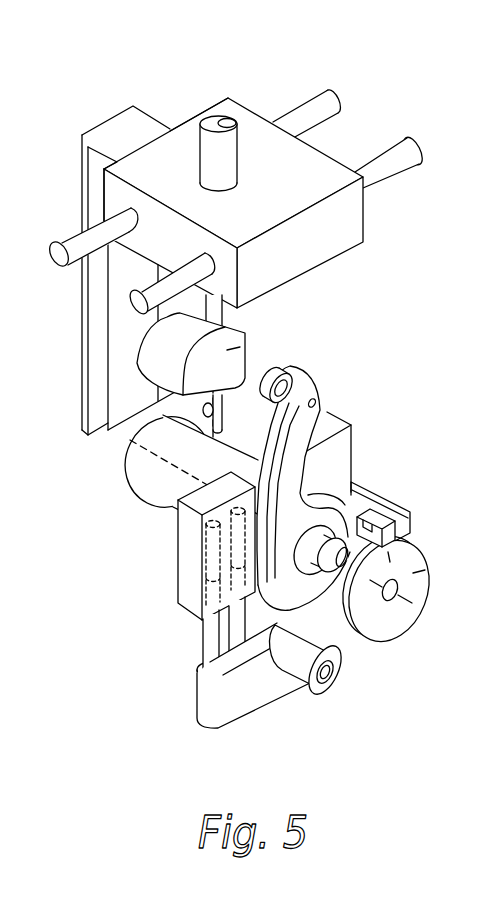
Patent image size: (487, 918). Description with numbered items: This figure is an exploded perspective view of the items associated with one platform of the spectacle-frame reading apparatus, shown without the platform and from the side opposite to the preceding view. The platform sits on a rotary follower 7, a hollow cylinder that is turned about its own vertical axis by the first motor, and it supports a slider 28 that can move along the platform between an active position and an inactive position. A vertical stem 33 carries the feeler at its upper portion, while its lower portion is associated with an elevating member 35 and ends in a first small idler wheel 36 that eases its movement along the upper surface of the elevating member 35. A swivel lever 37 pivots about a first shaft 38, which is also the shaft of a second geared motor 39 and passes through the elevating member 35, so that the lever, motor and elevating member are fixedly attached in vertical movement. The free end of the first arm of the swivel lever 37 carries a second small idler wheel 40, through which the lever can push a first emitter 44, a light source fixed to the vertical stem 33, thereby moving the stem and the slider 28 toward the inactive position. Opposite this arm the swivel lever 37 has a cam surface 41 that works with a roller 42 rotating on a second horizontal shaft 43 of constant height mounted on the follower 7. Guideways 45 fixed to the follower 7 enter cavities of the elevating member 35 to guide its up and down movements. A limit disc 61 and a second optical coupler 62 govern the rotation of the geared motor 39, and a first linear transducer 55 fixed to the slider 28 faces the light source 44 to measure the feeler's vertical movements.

The rotary follower 7 is at (238, 703).
The slider 28 is at (232, 112).
The vertical stem 33 is at (245, 388).
The elevating member 35 is at (187, 544).
The first small idler wheel 36 is at (201, 437).
The swivel lever 37 is at (297, 440).
The first shaft 38 is at (348, 540).
The second geared motor 39 is at (138, 485).
The second small idler wheel 40 is at (282, 372).
The cam surface 41 is at (322, 613).
The roller 42 is at (320, 650).
The second horizontal shaft 43 is at (330, 690).
The first emitter 44 is at (243, 317).
The guideways 45 is at (210, 634).
The first linear transducer 55 is at (97, 310).
The limit disc 61 is at (412, 593).
The second optical coupler 62 is at (380, 515).